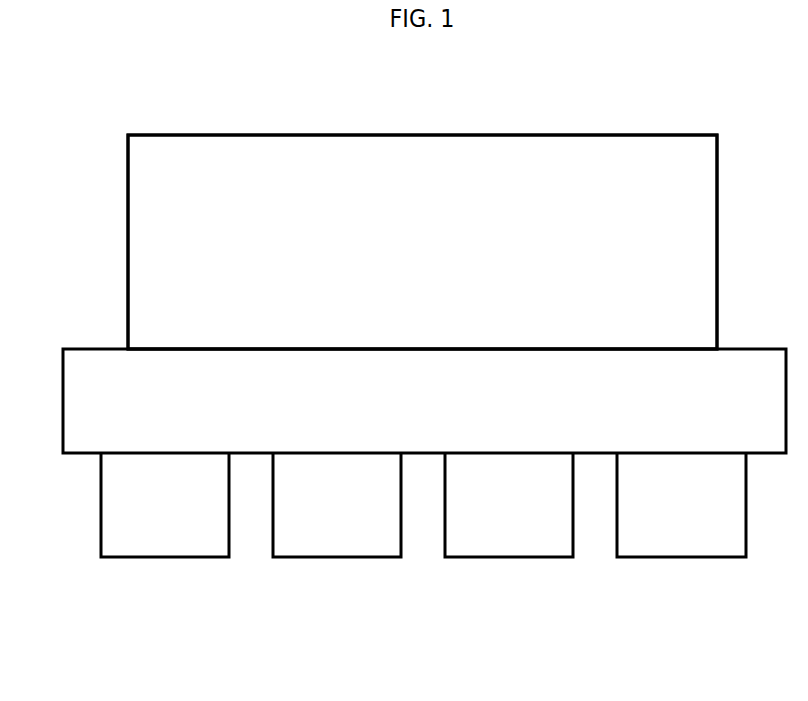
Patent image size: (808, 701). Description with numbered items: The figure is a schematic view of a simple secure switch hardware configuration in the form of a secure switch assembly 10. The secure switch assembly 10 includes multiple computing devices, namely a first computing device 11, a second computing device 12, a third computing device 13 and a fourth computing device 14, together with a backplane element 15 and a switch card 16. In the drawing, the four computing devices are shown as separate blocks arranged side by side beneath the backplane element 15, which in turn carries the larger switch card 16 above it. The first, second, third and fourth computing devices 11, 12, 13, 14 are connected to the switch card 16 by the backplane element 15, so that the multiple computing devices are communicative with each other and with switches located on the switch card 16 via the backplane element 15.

The secure switch assembly 10 is at (124, 135).
The first computing device 11 is at (174, 543).
The second computing device 12 is at (356, 539).
The third computing device 13 is at (507, 543).
The fourth computing device 14 is at (676, 543).
The backplane element 15 is at (97, 368).
The switch card 16 is at (157, 224).